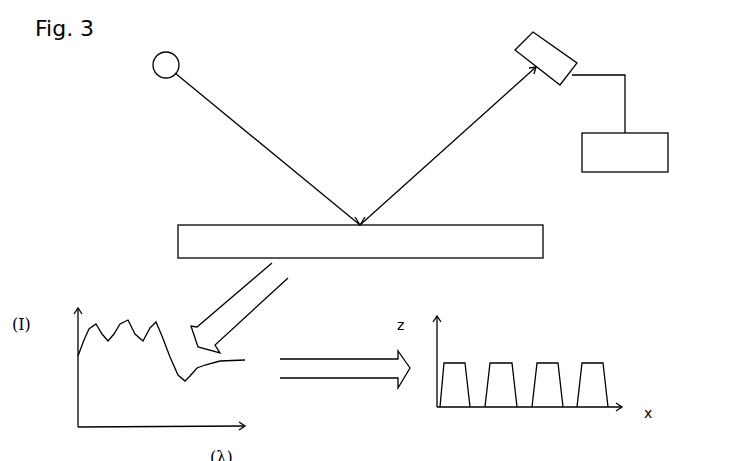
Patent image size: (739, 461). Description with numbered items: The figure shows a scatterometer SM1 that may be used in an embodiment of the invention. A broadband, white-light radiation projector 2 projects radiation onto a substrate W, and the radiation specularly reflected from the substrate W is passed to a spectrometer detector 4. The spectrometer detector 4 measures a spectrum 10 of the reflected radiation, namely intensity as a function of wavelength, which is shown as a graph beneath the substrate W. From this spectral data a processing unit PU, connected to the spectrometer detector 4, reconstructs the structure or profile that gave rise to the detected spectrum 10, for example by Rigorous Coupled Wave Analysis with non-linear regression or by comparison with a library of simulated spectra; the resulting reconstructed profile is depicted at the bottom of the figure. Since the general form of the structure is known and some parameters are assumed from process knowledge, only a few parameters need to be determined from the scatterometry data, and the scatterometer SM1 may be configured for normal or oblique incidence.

The broadband radiation projector 2 is at (180, 62).
The spectrometer detector 4 is at (574, 61).
The spectrum 10 is at (471, 90).
The scatterometer SM1 is at (143, 142).
The substrate W is at (360, 241).
The processing unit PU is at (620, 123).